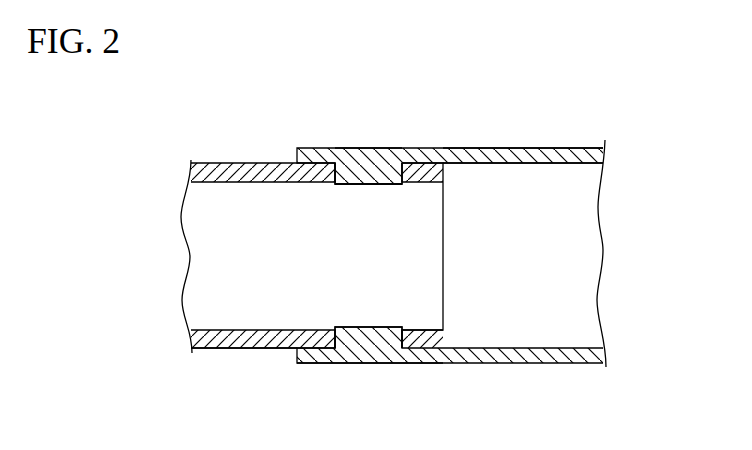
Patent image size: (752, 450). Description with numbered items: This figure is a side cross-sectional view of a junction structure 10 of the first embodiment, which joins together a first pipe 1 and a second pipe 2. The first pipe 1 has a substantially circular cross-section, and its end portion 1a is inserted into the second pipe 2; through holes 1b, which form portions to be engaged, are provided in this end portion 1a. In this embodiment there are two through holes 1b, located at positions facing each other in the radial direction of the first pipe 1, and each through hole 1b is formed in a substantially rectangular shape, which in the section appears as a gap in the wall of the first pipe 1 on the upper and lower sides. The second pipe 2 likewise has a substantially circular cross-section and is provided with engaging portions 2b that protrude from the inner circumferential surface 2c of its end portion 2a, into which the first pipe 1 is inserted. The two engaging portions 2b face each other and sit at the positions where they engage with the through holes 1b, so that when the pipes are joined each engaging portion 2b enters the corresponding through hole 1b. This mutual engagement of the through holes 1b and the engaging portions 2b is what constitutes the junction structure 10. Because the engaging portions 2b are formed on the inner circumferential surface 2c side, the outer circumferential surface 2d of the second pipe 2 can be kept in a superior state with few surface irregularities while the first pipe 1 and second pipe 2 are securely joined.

The first pipe 1 is at (237, 348).
The end portion 1a is at (300, 364).
The through hole 1b is at (336, 175).
The second pipe 2 is at (537, 365).
The end portion 2a is at (417, 364).
The engaging portion 2b is at (369, 163).
The inner circumferential surface 2c is at (482, 163).
The outer circumferential surface 2d is at (542, 148).
The junction structure 10 is at (384, 162).